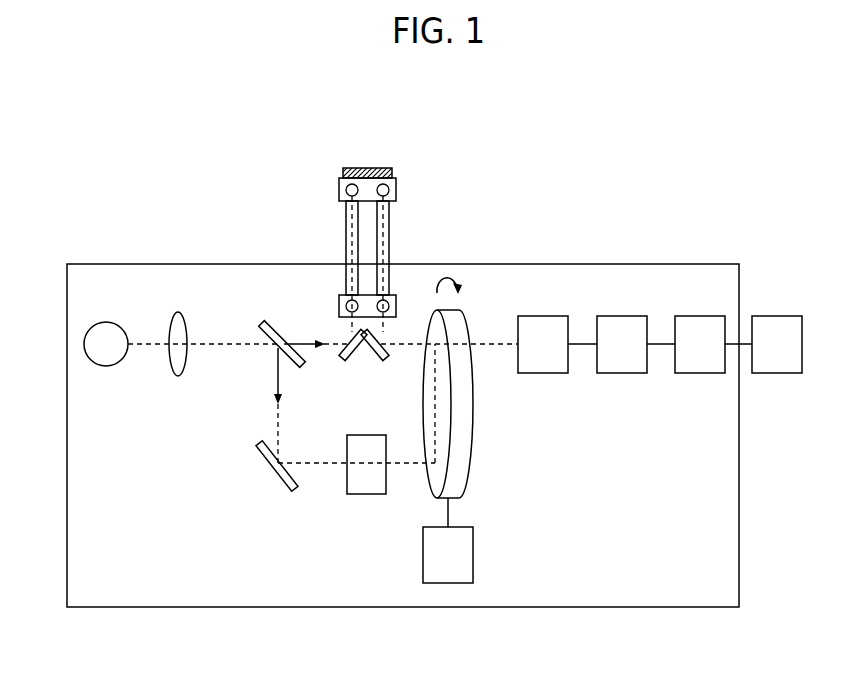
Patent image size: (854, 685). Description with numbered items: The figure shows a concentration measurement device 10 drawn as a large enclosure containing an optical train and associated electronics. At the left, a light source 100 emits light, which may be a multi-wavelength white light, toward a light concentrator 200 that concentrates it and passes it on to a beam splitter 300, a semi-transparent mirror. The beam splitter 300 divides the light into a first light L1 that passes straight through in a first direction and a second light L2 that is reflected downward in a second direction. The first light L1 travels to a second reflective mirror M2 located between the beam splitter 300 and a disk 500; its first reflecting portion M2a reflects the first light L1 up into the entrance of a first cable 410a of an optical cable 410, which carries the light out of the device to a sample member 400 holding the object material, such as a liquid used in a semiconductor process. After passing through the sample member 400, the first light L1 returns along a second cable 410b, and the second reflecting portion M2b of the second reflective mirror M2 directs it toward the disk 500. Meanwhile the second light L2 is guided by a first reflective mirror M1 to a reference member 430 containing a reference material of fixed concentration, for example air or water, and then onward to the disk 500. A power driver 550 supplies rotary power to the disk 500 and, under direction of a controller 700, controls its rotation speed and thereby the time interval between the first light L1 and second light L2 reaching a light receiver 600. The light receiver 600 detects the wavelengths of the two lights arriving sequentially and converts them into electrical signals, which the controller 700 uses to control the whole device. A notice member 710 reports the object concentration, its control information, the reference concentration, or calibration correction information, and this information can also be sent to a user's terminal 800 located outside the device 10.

The concentration measurement device 10 is at (724, 588).
The light source 100 is at (116, 322).
The light concentrator 200 is at (180, 312).
The beam splitter 300 is at (268, 320).
The sample member 400 is at (343, 172).
The optical cable 410 is at (437, 247).
The first cable 410a is at (359, 222).
The second cable 410b is at (389, 245).
The reference member 430 is at (355, 494).
The disk 500 is at (473, 452).
The power driver 550 is at (473, 533).
The light receiver 600 is at (560, 316).
The controller 700 is at (638, 316).
The notice member 710 is at (716, 316).
The user's terminal 800 is at (794, 316).
The first reflective mirror M1 is at (263, 462).
The second reflective mirror M2 is at (366, 381).
The first reflecting portion M2a is at (343, 358).
The second reflecting portion M2b is at (384, 362).
The first light L1 is at (304, 333).
The second light L2 is at (268, 376).